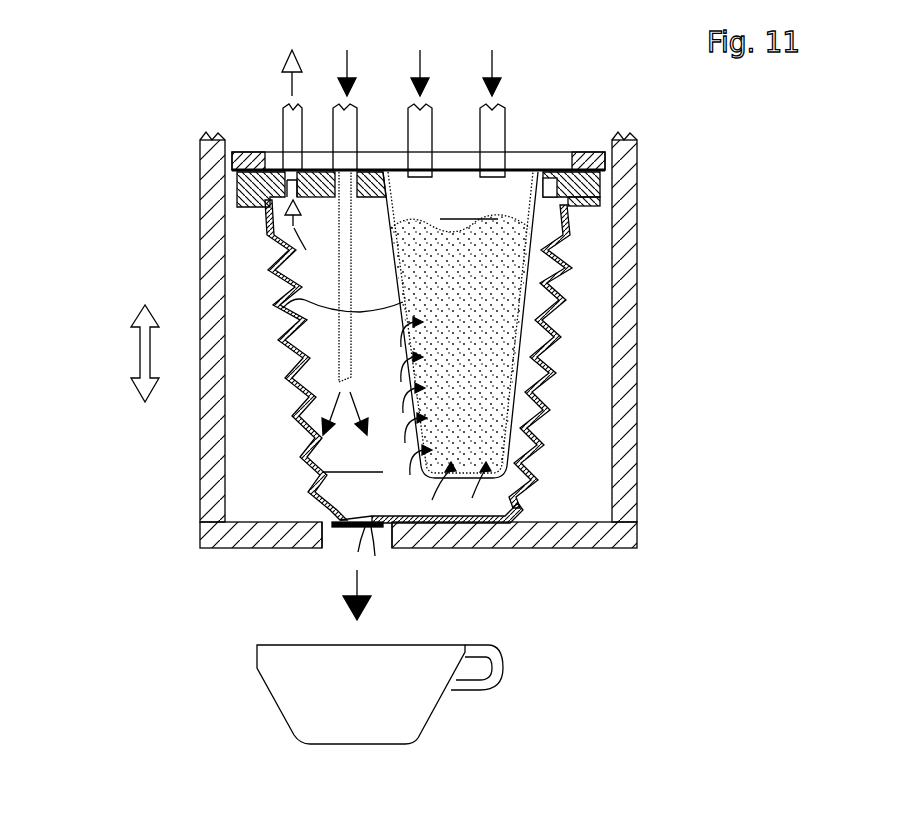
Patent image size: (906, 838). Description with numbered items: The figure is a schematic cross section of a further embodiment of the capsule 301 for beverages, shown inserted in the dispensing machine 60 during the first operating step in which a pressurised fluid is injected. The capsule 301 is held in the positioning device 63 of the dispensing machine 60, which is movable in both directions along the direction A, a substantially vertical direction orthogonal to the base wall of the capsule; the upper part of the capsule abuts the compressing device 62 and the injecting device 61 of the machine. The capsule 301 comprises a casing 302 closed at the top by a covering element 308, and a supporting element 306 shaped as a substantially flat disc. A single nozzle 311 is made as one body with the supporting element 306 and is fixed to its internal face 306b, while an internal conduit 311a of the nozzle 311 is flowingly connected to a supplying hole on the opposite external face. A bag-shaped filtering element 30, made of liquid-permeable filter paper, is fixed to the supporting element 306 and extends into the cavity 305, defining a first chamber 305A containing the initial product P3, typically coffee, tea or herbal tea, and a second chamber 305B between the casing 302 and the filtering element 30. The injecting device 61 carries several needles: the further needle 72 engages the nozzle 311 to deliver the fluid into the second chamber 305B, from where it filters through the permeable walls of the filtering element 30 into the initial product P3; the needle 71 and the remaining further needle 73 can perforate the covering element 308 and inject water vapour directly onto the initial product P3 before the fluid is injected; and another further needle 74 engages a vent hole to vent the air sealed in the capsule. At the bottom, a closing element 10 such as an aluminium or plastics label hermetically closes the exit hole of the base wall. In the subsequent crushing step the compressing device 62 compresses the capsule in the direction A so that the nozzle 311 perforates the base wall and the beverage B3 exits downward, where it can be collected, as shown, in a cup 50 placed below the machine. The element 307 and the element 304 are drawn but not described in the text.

The capsule 301 is at (192, 70).
The injecting device 61 is at (214, 108).
The dispensing machine 60 is at (612, 580).
The positioning device 63 is at (630, 535).
The compressing device 62 is at (605, 158).
The covering element 308 is at (518, 168).
The left support block 307 is at (232, 182).
The supporting element 306 is at (598, 200).
The internal face 306b is at (562, 233).
The further needle 74 is at (290, 125).
The further needle 72 is at (350, 125).
The needle 71 is at (427, 130).
The remaining further needle 73 is at (498, 131).
The casing 302 is at (553, 410).
The filtering element 30 is at (538, 438).
The nozzle 311 is at (340, 353).
The internal conduit 311a is at (338, 265).
The cavity 305 is at (318, 516).
The first chamber 305A is at (469, 206).
The second chamber 305B is at (353, 459).
The filter 304 is at (523, 313).
The initial product P3 is at (465, 352).
The direction A is at (143, 355).
The closing element 10 is at (375, 562).
The beverage B3 is at (350, 582).
The cup 50 is at (420, 716).